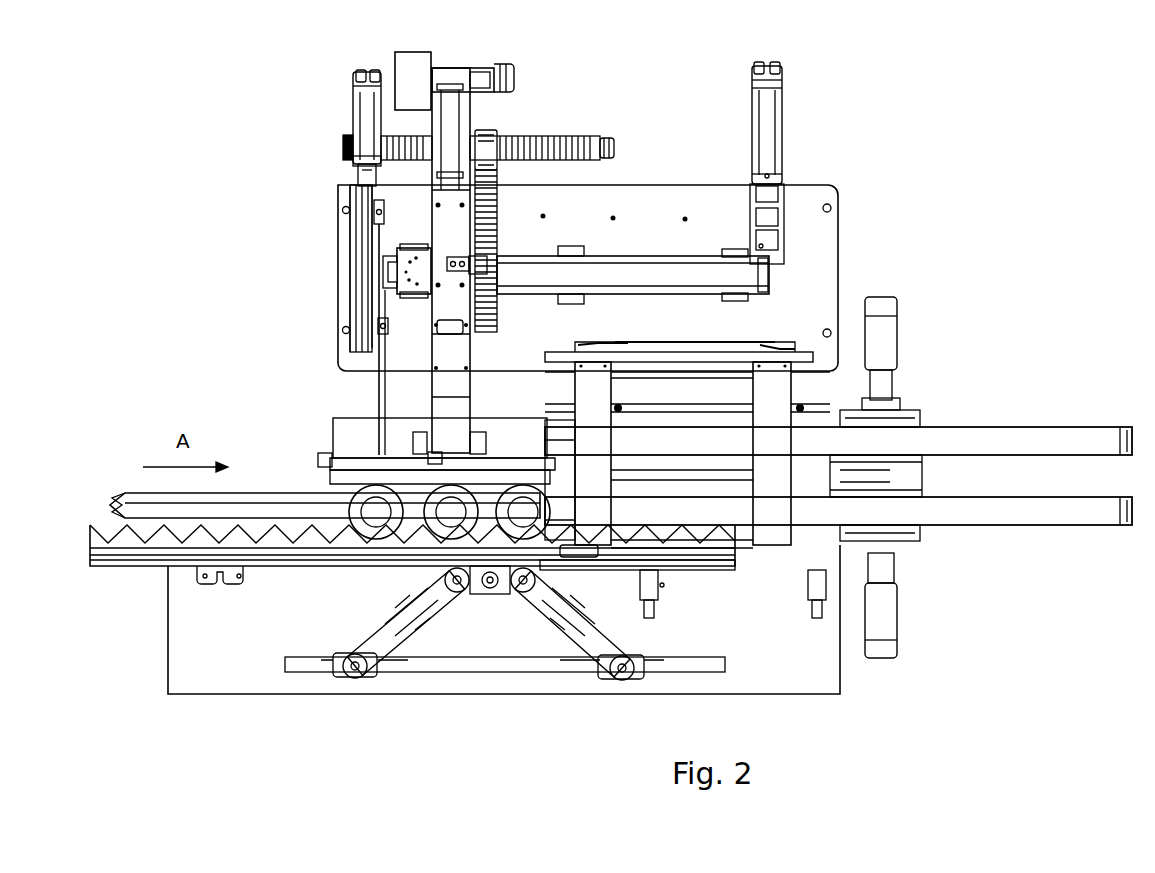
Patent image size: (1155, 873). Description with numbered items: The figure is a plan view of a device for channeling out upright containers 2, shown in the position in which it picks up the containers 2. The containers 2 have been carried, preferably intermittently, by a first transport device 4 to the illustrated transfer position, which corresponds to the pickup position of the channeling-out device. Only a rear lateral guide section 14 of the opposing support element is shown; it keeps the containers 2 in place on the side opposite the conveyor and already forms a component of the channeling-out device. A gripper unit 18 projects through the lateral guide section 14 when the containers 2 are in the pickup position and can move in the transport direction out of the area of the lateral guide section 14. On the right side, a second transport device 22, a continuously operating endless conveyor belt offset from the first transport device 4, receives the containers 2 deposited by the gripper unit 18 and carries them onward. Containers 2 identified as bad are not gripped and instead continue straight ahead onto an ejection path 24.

The upright containers 2 is at (523, 515).
The first transport device 4 is at (196, 545).
The rear lateral guide section 14 is at (352, 472).
The gripper unit 18 is at (446, 390).
The second transport device 22 is at (1028, 443).
The ejection path 24 is at (1022, 513).